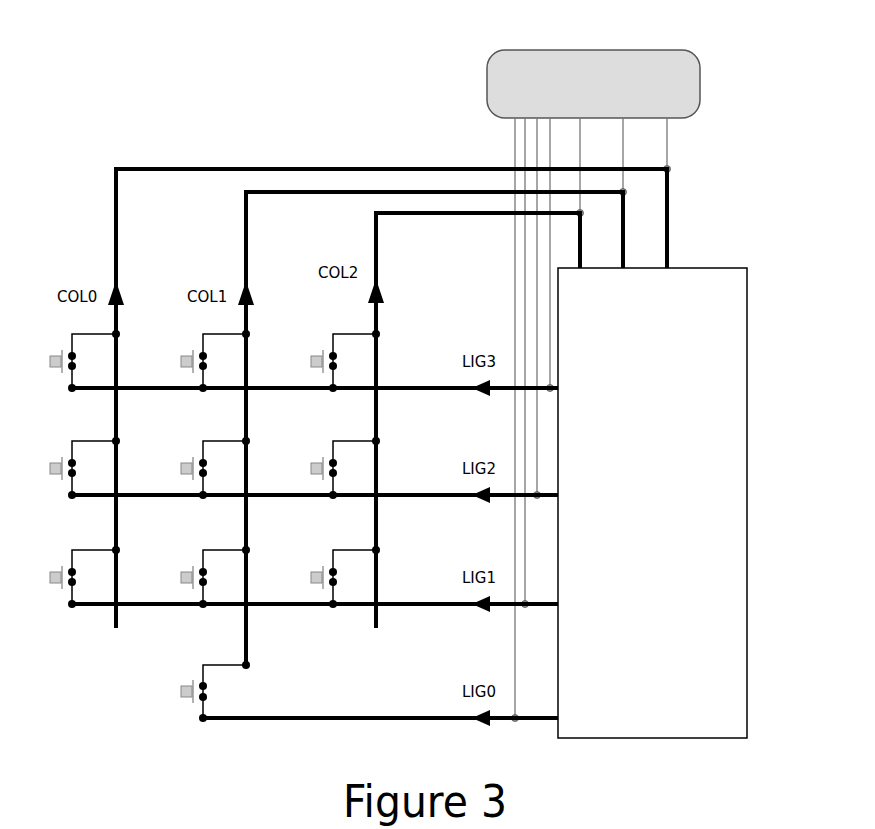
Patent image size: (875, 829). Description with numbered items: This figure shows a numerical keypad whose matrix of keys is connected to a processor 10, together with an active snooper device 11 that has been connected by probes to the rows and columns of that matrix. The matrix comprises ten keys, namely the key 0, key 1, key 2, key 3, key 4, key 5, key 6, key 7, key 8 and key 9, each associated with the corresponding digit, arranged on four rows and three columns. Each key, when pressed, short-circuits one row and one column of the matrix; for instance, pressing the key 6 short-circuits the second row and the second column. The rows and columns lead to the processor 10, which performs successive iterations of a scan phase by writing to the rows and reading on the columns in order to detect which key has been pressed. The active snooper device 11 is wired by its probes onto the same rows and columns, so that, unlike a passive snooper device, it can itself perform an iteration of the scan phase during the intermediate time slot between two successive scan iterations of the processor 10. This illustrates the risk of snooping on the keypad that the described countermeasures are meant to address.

The processor 10 is at (747, 298).
The active snooper device 11 is at (702, 64).
The key associated with digit 0 is at (212, 691).
The key associated with digit 1 is at (82, 361).
The key associated with digit 2 is at (82, 468).
The key associated with digit 3 is at (82, 577).
The key associated with digit 4 is at (212, 361).
The key associated with digit 5 is at (212, 468).
The key associated with digit 6 is at (212, 577).
The key associated with digit 7 is at (342, 361).
The key associated with digit 8 is at (342, 468).
The key associated with digit 9 is at (342, 577).